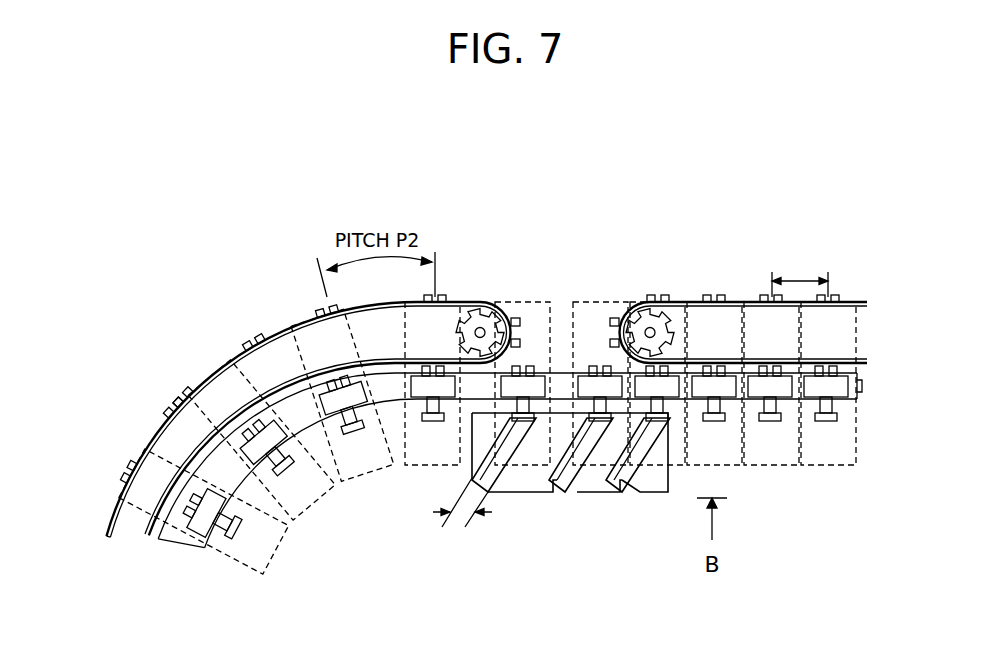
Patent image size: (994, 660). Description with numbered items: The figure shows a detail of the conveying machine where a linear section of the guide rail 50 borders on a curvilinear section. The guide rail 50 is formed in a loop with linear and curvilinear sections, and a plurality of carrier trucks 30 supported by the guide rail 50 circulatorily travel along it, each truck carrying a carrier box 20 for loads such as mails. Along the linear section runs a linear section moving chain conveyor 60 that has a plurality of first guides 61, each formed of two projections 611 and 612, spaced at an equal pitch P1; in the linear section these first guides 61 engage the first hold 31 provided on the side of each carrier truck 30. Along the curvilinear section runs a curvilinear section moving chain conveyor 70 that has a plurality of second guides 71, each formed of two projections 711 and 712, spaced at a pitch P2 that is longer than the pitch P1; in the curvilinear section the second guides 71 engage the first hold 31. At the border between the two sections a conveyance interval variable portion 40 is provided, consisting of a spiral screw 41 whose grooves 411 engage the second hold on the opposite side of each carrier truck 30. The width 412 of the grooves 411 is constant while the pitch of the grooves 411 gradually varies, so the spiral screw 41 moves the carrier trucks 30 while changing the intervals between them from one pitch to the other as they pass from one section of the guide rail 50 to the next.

The carrier box 20 is at (830, 468).
The carrier truck 30 is at (835, 380).
The first hold 31 is at (767, 425).
The conveyance interval variable portion 40 is at (572, 495).
The spiral screw 41 is at (600, 496).
The groove 411 is at (563, 483).
The width of groove 412 is at (460, 518).
The guide rail 50 is at (843, 405).
The linear section moving chain conveyor 60 is at (797, 300).
The first guide 61 is at (718, 295).
The projection 611 is at (702, 296).
The projection 612 is at (727, 296).
The curvilinear section moving chain conveyor 70 is at (300, 313).
The second guide 71 is at (166, 388).
The projection 711 is at (160, 395).
The projection 712 is at (174, 388).